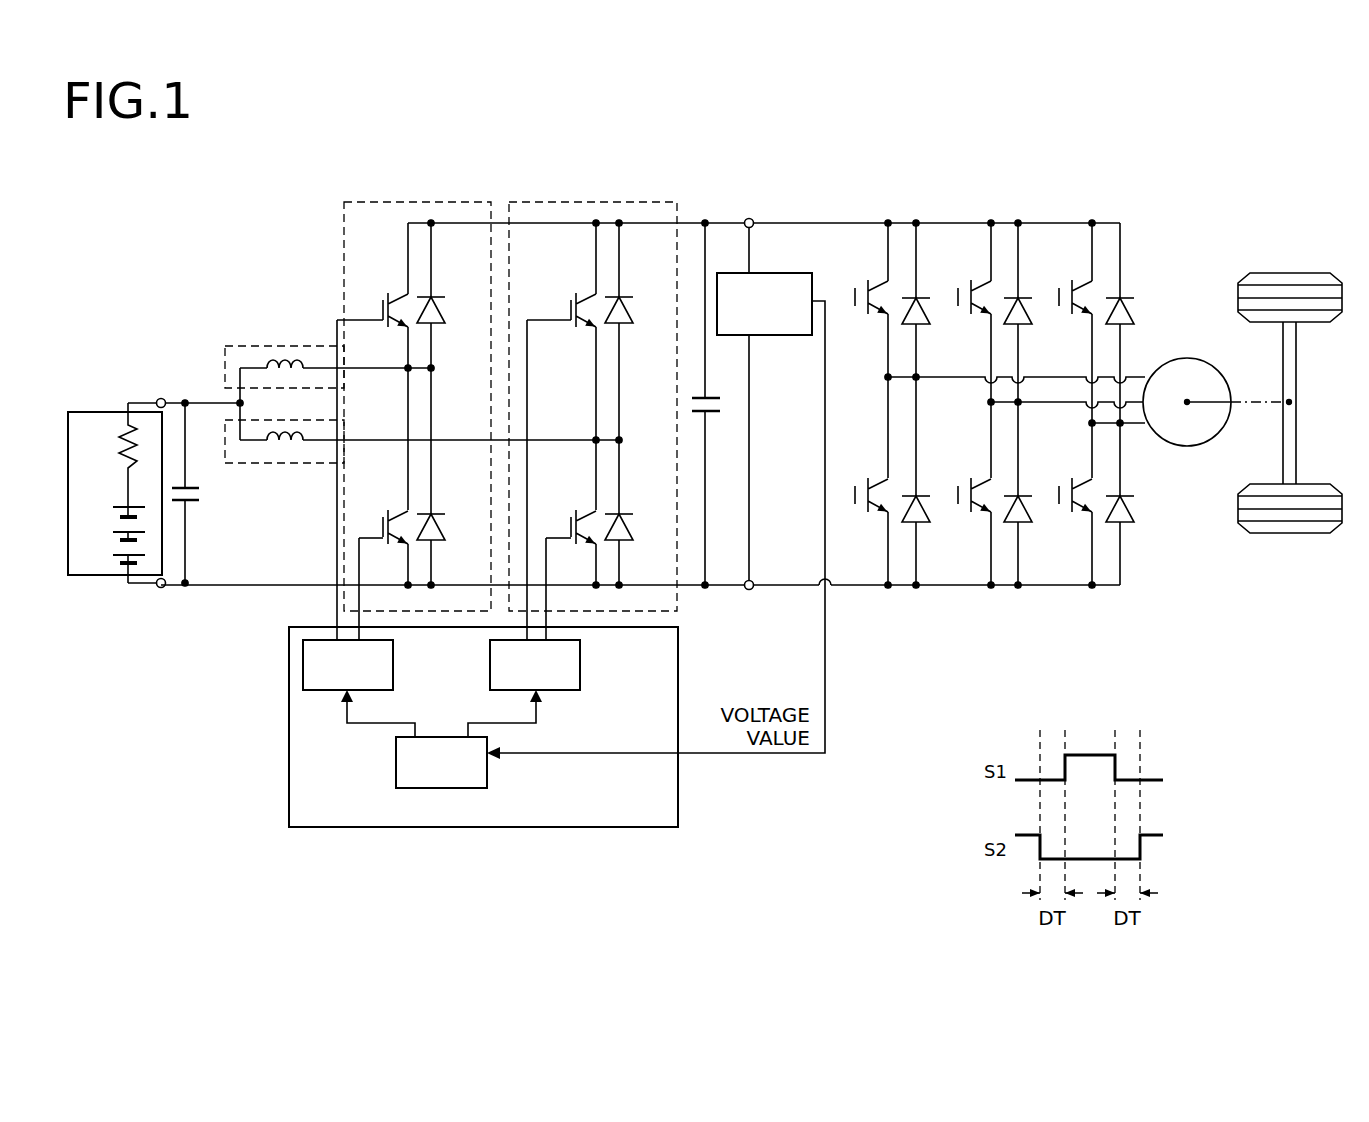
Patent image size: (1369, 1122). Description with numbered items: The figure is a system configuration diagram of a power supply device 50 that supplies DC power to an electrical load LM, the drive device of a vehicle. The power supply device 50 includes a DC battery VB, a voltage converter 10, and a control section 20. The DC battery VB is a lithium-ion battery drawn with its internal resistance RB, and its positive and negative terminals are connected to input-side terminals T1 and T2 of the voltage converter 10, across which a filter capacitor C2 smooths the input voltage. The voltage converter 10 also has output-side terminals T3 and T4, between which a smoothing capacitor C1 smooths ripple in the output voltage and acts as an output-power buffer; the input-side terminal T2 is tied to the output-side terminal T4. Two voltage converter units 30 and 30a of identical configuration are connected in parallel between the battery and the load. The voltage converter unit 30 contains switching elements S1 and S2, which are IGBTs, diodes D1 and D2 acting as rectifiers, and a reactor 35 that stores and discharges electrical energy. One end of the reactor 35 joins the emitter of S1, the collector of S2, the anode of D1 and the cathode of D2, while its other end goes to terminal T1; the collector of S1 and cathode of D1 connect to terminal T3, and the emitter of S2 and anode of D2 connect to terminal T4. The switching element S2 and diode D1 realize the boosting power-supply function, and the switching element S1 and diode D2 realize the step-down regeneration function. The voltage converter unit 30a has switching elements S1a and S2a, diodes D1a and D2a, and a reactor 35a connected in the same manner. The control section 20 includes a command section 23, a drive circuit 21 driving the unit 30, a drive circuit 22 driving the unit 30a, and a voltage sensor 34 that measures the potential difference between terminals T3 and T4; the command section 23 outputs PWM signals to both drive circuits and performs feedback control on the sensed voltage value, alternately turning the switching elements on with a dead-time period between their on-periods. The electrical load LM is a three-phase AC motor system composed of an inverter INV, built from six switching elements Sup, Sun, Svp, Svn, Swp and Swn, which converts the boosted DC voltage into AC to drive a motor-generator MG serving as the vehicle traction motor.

The power supply device 50 is at (138, 285).
The DC battery VB is at (110, 412).
The internal resistance RB is at (106, 455).
The input-side terminal T1 is at (162, 399).
The input-side terminal T2 is at (162, 591).
The filter capacitor C2 is at (197, 493).
The reactor 35a is at (285, 357).
The reactor 35 is at (285, 447).
The voltage converter unit 30a is at (468, 202).
The voltage converter unit 30 is at (656, 202).
The switching element S1a is at (389, 294).
The diode D1a is at (440, 297).
The switching element S2a is at (384, 514).
The diode D2a is at (440, 515).
The switching element S1 is at (577, 294).
The diode D1 is at (628, 297).
The switching element S2 is at (572, 514).
The diode D2 is at (628, 515).
The voltage converter 10 is at (693, 219).
The smoothing capacitor C1 is at (717, 404).
The output-side terminal T3 is at (752, 218).
The output-side terminal T4 is at (752, 582).
The voltage sensor 34 is at (795, 273).
The inverter INV is at (1043, 216).
The switching element Sup is at (870, 288).
The switching element Sun is at (870, 483).
The switching element Svp is at (973, 288).
The switching element Svn is at (973, 483).
The switching element Swp is at (1074, 288).
The switching element Swn is at (1074, 483).
The electrical load LM is at (1208, 232).
The motor-generator MG is at (1187, 358).
The control section 20 is at (686, 670).
The drive circuit 21 is at (580, 681).
The drive circuit 22 is at (393, 681).
The command section 23 is at (487, 784).